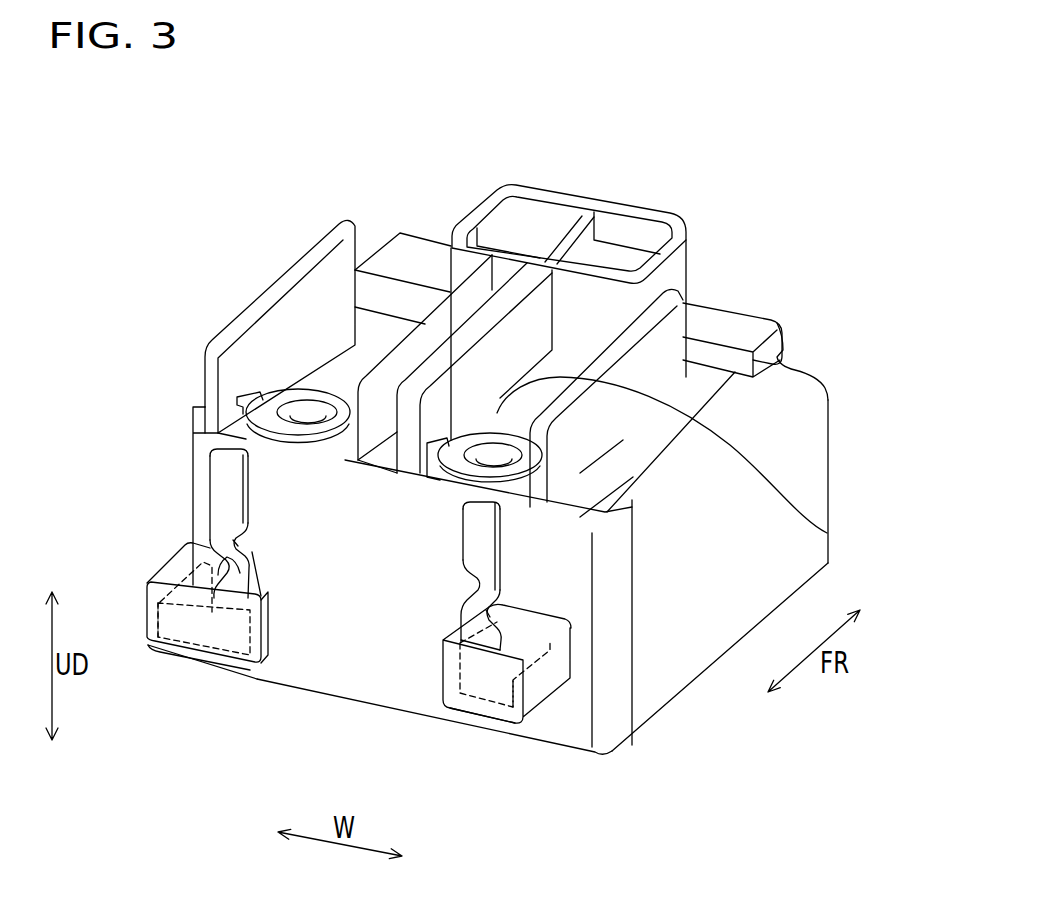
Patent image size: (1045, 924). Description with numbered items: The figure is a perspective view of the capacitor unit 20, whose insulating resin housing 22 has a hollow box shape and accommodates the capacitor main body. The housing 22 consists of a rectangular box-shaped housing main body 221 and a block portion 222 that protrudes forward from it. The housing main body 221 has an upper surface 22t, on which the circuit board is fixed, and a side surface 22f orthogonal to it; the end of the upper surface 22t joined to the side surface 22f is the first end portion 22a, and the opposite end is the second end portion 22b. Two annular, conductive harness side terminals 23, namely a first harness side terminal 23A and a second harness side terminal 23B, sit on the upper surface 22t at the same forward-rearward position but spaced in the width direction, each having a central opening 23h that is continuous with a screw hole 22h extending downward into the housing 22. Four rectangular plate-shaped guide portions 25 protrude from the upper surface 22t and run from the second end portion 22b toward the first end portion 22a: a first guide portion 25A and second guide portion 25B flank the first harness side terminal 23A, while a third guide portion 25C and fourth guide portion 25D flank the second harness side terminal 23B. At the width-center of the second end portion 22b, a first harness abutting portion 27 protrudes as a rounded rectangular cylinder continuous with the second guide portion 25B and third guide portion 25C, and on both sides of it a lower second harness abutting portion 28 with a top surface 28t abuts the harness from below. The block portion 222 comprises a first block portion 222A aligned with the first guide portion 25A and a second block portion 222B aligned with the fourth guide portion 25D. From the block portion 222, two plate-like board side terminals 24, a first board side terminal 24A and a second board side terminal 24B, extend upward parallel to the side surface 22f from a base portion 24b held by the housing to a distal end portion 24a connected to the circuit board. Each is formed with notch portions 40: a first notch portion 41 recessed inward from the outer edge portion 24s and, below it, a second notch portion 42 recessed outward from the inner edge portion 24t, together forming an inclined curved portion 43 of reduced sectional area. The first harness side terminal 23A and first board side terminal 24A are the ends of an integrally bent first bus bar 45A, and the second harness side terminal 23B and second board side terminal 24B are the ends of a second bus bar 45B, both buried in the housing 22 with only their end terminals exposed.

The capacitor unit 20 is at (851, 170).
The housing 22 is at (833, 467).
The first end portion 22a is at (213, 440).
The second end portion 22b is at (795, 367).
The side surface 22f is at (350, 675).
The screw hole 22h is at (298, 412).
The upper surface 22t is at (347, 345).
The housing main body 221 is at (667, 687).
The block portion 222 is at (320, 723).
The first block portion 222A is at (173, 655).
The second block portion 222B is at (497, 717).
The harness side terminal 23 is at (530, 388).
The first harness side terminal 23A is at (259, 393).
The second harness side terminal 23B is at (827, 533).
The opening 23h is at (307, 413).
The board side terminal 24 is at (407, 590).
The first board side terminal 24A is at (207, 480).
The second board side terminal 24B is at (507, 534).
The distal end portion 24a is at (230, 450).
The base portion 24b is at (263, 665).
The outer edge portion 24s is at (210, 518).
The inner edge portion 24t is at (263, 588).
The guide portion 25 is at (440, 293).
The first guide portion 25A is at (213, 340).
The second guide portion 25B is at (420, 262).
The third guide portion 25C is at (508, 265).
The fourth guide portion 25D is at (700, 260).
The first harness abutting portion 27 is at (613, 222).
The second harness abutting portion 28 is at (380, 241).
The top surface 28t is at (396, 250).
The notch portion 40 is at (391, 589).
The first notch portion 41 is at (197, 558).
The second notch portion 42 is at (240, 538).
The curved portion 43 is at (243, 542).
The first bus bar 45A is at (145, 632).
The second bus bar 45B is at (525, 698).